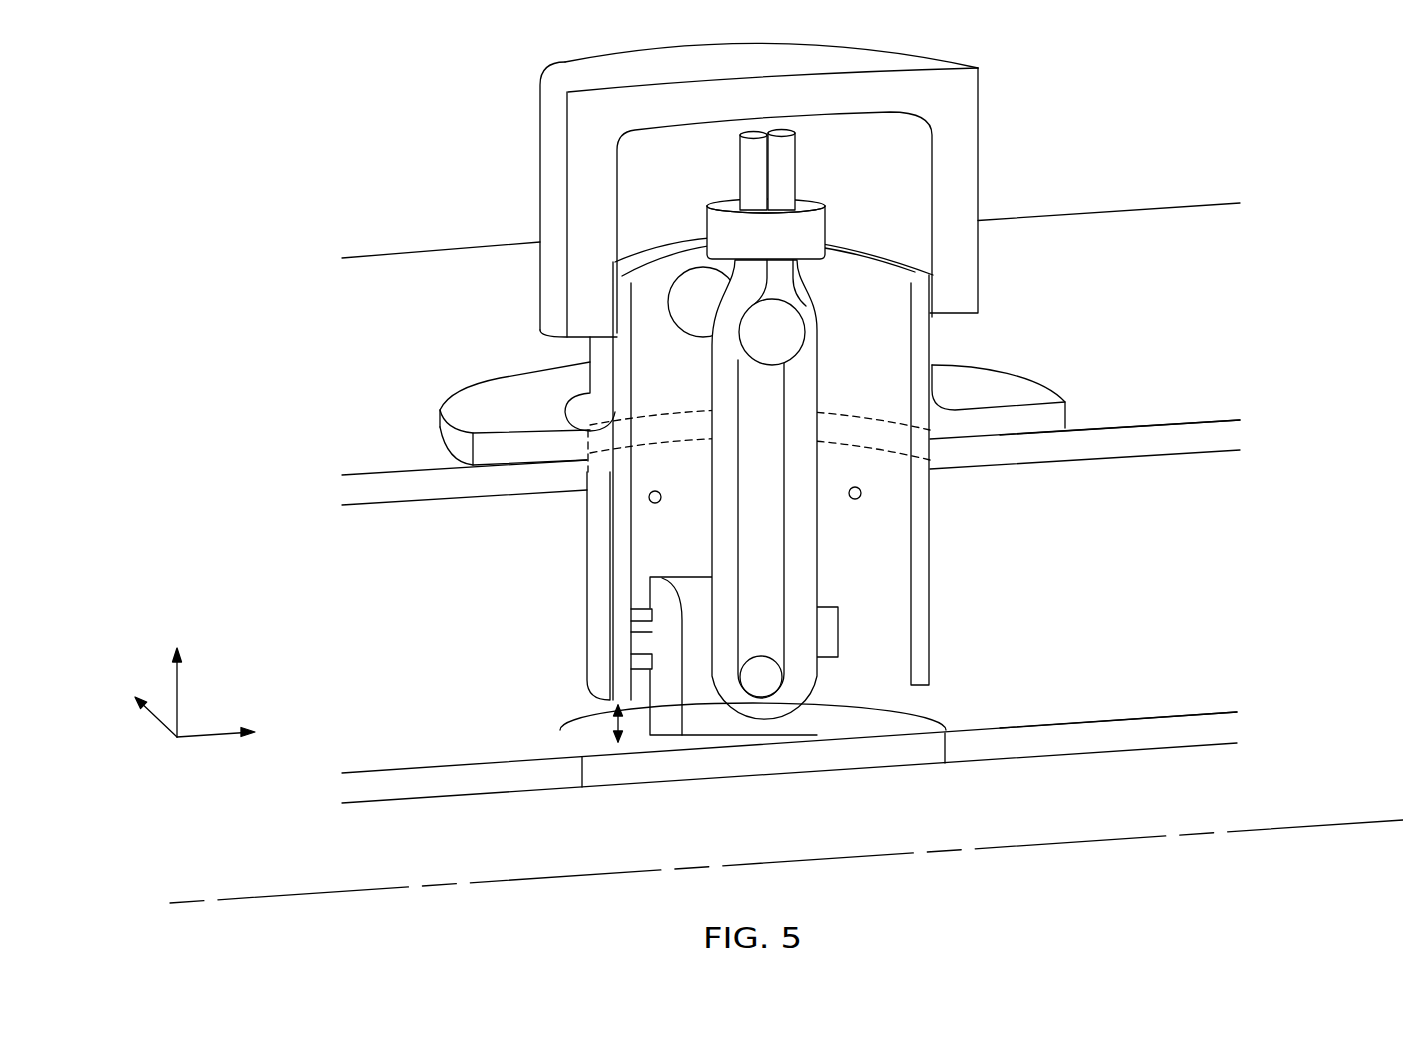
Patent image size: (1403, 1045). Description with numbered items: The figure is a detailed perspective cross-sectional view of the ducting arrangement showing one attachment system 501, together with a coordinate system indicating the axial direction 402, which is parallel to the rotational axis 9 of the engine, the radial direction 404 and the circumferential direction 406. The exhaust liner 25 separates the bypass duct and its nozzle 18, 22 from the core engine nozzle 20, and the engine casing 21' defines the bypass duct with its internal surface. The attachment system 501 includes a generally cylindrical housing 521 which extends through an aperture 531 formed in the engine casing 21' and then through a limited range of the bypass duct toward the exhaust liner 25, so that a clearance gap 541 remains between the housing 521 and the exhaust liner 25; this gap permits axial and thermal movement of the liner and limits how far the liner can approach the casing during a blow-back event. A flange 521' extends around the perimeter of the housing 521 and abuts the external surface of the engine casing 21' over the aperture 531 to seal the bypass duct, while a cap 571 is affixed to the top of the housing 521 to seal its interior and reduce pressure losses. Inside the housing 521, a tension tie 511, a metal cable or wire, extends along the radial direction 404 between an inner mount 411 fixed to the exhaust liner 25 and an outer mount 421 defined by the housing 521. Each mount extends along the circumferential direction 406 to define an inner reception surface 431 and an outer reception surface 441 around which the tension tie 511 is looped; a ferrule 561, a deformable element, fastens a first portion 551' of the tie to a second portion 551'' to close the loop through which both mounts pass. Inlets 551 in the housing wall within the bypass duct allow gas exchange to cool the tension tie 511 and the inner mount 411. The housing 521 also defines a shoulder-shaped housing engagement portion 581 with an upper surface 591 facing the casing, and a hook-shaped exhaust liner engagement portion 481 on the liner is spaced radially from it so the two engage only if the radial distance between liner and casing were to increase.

The rotational axis 9 is at (1350, 823).
The core engine nozzle 20 is at (1147, 801).
The exhaust liner 25 is at (1115, 744).
The engine casing 21' is at (1085, 486).
The support rail 18, 22 is at (1138, 596).
The attachment system 501 is at (1037, 156).
The cap 571 is at (585, 78).
The aperture 531 is at (890, 440).
The housing 521 is at (527, 518).
The flange 521' is at (998, 361).
The inlets 551 is at (755, 443).
The outer circumferentially extending reception surface 441 is at (697, 300).
The exhaust liner engagement portion 481 is at (683, 575).
The upper surface 591 is at (640, 625).
The housing engagement portion 581 is at (645, 645).
The inner circumferentially extending reception surface 431 is at (748, 657).
The tension tie 511 is at (800, 548).
The outer mount 421 is at (778, 330).
The inner mount 411 is at (802, 718).
The ferrule 561 is at (805, 228).
The second portion of the tension tie 551'' is at (693, 171).
The first portion of the tension tie 551' is at (844, 165).
The clearance gap 541 is at (612, 716).
The radial direction 404 is at (180, 690).
The axial direction 402 is at (213, 740).
The circumferential direction 406 is at (140, 697).